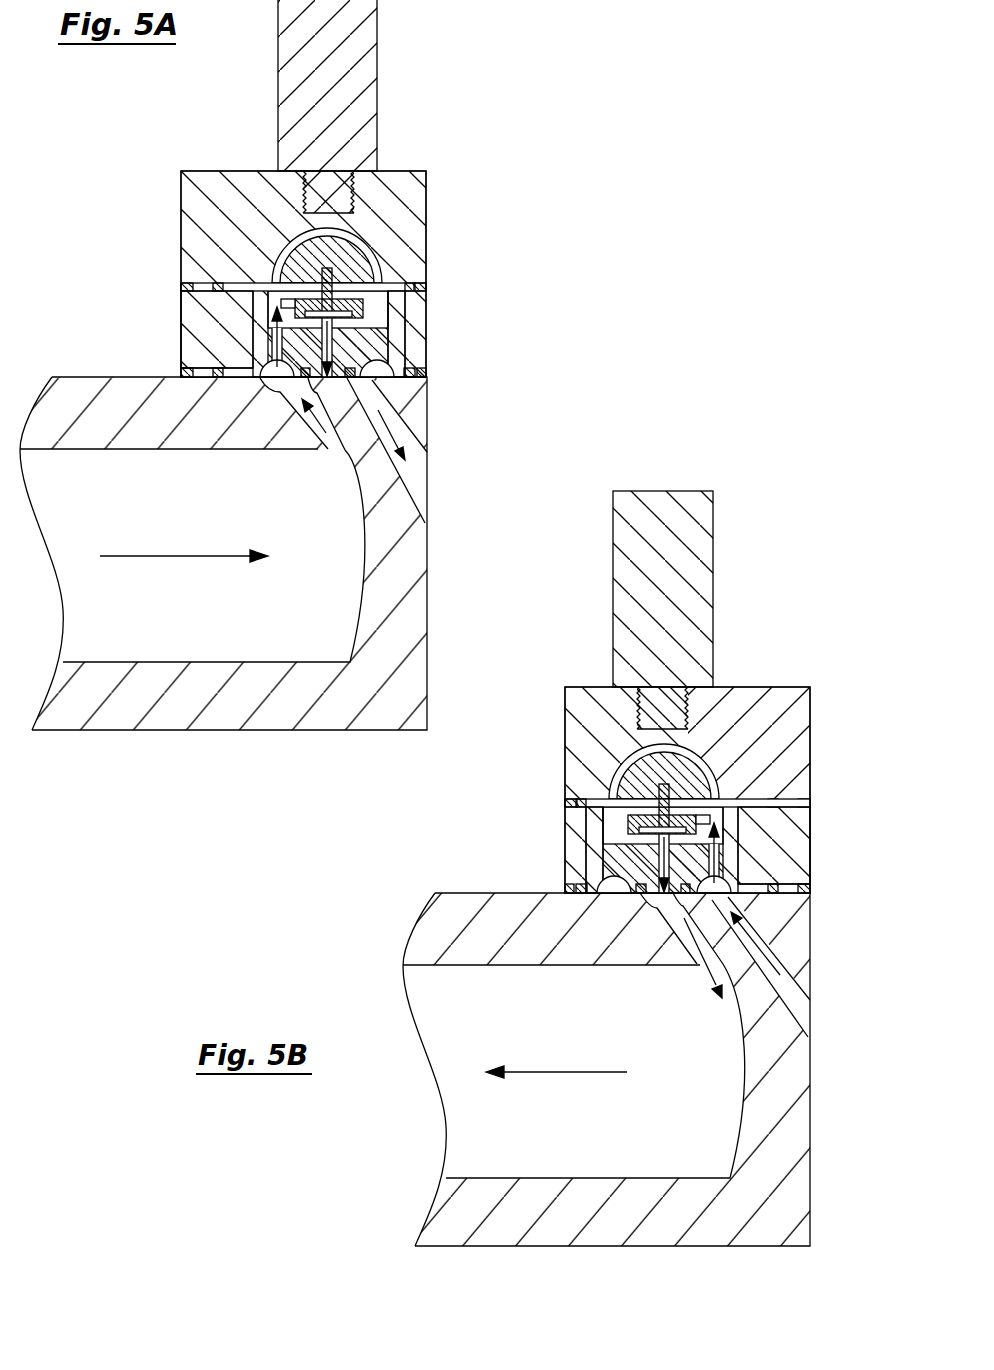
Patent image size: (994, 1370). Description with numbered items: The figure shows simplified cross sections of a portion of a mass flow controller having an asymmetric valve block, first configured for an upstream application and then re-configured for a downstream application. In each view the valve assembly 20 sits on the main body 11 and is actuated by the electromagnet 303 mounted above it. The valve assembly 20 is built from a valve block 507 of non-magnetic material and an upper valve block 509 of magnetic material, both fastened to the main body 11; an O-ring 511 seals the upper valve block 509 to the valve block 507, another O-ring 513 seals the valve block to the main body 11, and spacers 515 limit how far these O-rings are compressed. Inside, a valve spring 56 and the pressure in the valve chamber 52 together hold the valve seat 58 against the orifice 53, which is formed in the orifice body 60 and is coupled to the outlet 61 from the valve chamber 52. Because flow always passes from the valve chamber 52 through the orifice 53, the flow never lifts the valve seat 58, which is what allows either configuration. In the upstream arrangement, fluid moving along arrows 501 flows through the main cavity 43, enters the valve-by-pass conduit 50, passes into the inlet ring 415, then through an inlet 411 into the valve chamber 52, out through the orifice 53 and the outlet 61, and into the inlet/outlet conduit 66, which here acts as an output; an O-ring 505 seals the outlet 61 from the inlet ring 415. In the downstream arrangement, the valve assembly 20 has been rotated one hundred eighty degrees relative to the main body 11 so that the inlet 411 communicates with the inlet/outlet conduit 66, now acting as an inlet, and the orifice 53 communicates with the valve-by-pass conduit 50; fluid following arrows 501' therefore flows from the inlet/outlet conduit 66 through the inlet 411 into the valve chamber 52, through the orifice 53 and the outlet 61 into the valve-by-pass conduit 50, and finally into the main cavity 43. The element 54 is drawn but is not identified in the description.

In FIG. 5A, the main body 11 is at (205, 710).
In FIG. 5B, the main body 11 is at (468, 1208).
In FIG. 5A, the valve assembly 20 is at (448, 182).
In FIG. 5B, the valve assembly 20 is at (813, 668).
In FIG. 5A, the main cavity 43 is at (204, 619).
In FIG. 5B, the main cavity 43 is at (583, 1137).
In FIG. 5A, the valve-by-pass conduit 50 is at (300, 400).
In FIG. 5B, the valve-by-pass conduit 50 is at (690, 925).
In FIG. 5A, the valve chamber 52 is at (268, 300).
In FIG. 5B, the valve chamber 52 is at (718, 810).
In FIG. 5B, the orifice 53 is at (657, 840).
In FIG. 5A, the dome cap 54 is at (383, 240).
In FIG. 5A, the valve spring 56 is at (405, 272).
In FIG. 5B, the valve spring 56 is at (748, 768).
In FIG. 5A, the valve seat 58 is at (412, 302).
In FIG. 5B, the valve seat 58 is at (613, 823).
In FIG. 5A, the orifice body 60 is at (415, 366).
In FIG. 5B, the orifice body 60 is at (735, 832).
In FIG. 5A, the outlet 61 is at (427, 339).
In FIG. 5B, the outlet 61 is at (590, 858).
In FIG. 5A, the inlet/outlet conduit 66 is at (412, 480).
In FIG. 5B, the inlet/outlet conduit 66 is at (803, 970).
In FIG. 5A, the electromagnet 303 is at (345, 78).
In FIG. 5B, the electromagnet 303 is at (682, 491).
In FIG. 5A, the inlet 411 is at (246, 330).
In FIG. 5B, the inlet 411 is at (774, 845).
In FIG. 5A, the inlet ring 415 is at (386, 377).
In FIG. 5B, the inlet ring 415 is at (740, 875).
In FIG. 5A, the arrows 501 is at (264, 508).
In FIG. 5B, the arrows 501' is at (690, 996).
In FIG. 5A, the O-ring 505 is at (372, 398).
In FIG. 5A, the valve block 507 is at (420, 330).
In FIG. 5B, the valve block 507 is at (810, 810).
In FIG. 5A, the upper valve block 509 is at (427, 171).
In FIG. 5B, the upper valve block 509 is at (810, 713).
In FIG. 5A, the O-ring 511 is at (213, 283).
In FIG. 5A, the O-ring 513 is at (220, 378).
In FIG. 5A, the spacers 515 is at (183, 373).